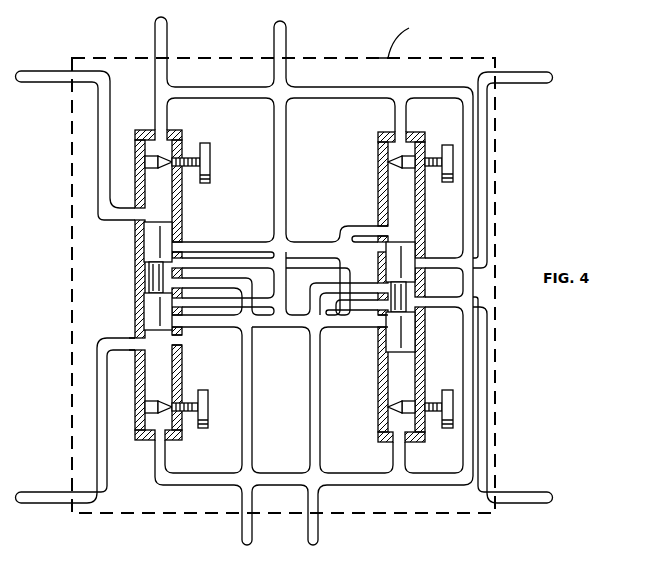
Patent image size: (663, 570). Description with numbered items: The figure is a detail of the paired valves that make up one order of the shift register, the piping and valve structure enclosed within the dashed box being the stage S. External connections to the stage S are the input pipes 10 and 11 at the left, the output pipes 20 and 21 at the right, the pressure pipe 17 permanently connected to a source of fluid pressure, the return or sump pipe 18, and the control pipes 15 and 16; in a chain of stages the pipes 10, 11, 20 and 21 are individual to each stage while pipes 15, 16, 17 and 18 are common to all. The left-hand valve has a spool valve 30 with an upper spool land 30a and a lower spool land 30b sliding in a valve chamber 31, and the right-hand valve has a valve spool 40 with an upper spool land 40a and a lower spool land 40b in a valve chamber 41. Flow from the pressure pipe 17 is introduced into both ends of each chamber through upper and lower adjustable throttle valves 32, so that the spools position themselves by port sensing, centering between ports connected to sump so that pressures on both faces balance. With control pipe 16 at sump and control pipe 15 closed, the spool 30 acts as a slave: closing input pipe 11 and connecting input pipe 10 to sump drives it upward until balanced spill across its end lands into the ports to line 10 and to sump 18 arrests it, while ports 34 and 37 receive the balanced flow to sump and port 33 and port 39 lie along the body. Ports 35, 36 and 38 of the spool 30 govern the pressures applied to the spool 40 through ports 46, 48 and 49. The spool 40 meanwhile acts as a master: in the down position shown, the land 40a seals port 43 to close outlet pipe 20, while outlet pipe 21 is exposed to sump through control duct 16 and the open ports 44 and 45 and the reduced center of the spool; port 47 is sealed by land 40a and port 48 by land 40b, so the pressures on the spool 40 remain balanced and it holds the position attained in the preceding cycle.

The paired valve stage S is at (398, 33).
The input pipe 10 is at (45, 71).
The input pipe 11 is at (48, 492).
The control pipe 15 is at (240, 540).
The control pipe 16 is at (320, 538).
The pressure pipe 17 is at (156, 42).
The return or sump pipe 18 is at (277, 40).
The output pipe 20 is at (505, 72).
The output pipe 21 is at (505, 492).
The spool valve 30 is at (137, 276).
The upper spool land 30a is at (150, 270).
The lower spool land 30b is at (155, 313).
The valve chamber 31 is at (183, 208).
The adjustable throttle valve 32 is at (211, 158).
The inlet port 33 is at (140, 220).
The port 34 is at (137, 345).
The port 35 is at (228, 284).
The port 36 is at (190, 262).
The port 37 is at (185, 243).
The port 38 is at (186, 321).
The port 39 is at (183, 332).
The valve spool 40 is at (424, 290).
The upper spool land 40a is at (414, 248).
The lower spool land 40b is at (415, 337).
The valve chamber 41 is at (378, 152).
The port 43 is at (427, 265).
The port 44 is at (427, 301).
The port 45 is at (378, 285).
The port 46 is at (372, 228).
The port 47 is at (362, 230).
The port 48 is at (378, 325).
The port 49 is at (370, 318).